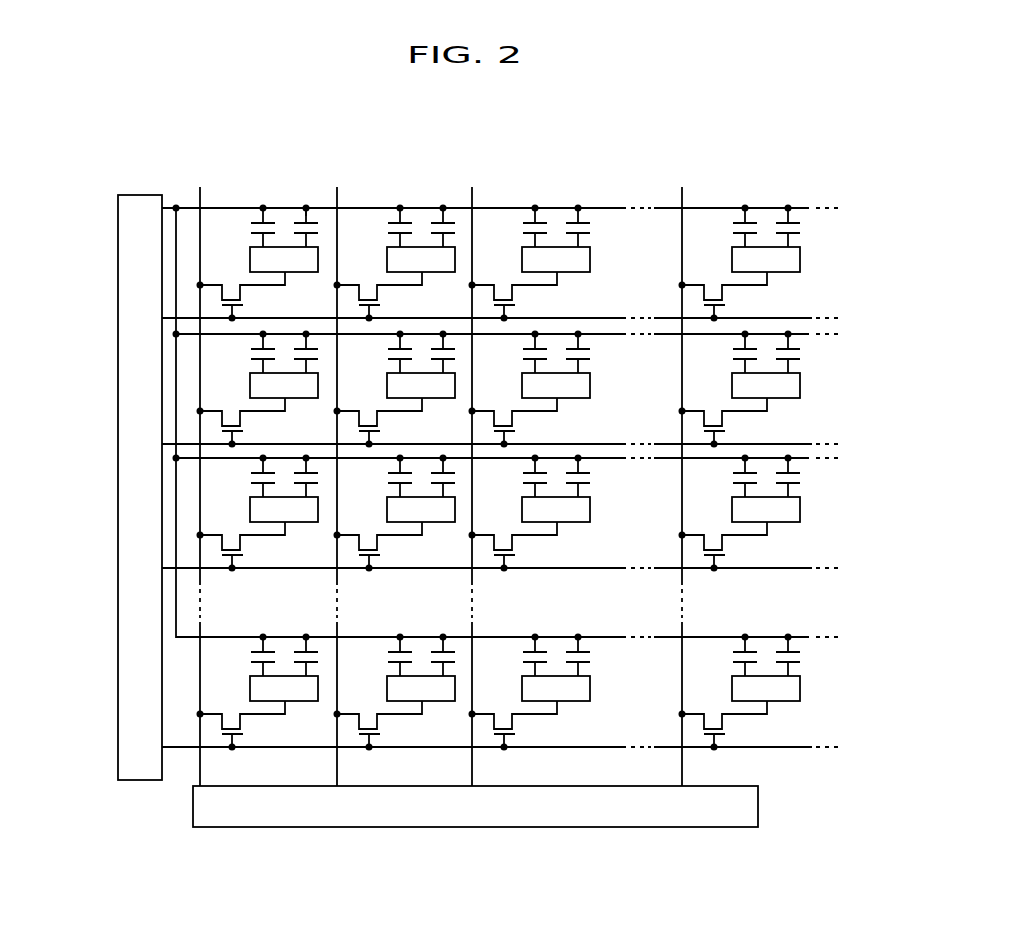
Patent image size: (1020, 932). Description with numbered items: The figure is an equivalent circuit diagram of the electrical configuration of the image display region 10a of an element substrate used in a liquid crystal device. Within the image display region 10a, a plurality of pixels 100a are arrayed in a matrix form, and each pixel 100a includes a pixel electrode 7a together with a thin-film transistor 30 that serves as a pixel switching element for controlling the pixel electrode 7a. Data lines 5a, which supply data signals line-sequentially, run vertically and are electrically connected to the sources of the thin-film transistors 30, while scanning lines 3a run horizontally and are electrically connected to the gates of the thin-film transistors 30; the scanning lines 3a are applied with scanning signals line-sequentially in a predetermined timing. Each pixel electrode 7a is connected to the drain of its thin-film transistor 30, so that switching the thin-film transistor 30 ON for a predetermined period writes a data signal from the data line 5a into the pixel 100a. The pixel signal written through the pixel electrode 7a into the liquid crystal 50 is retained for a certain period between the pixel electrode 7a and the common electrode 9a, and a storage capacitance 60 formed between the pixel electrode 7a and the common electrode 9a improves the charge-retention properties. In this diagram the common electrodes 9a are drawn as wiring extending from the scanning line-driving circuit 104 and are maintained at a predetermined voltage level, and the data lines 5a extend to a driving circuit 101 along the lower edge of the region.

The scanning line 3a is at (812, 318).
The data line 5a is at (200, 190).
The pixel electrode 7a is at (306, 274).
The common electrode 9a is at (387, 208).
The image display region 10a is at (775, 192).
The thin-film transistor 30 is at (242, 291).
The liquid crystal 50 is at (320, 230).
The storage capacitance 60 is at (252, 229).
The pixel 100a is at (301, 213).
The data line driving circuit 101 is at (200, 812).
The scanning line-driving circuit 104 is at (130, 748).